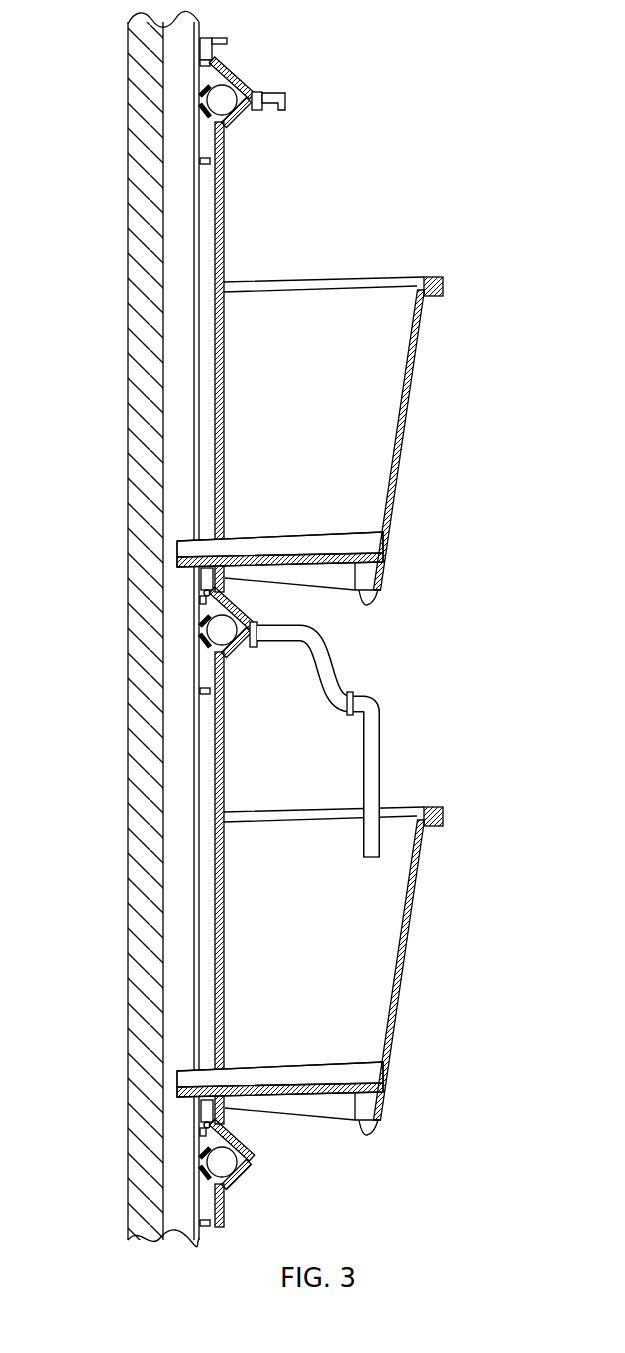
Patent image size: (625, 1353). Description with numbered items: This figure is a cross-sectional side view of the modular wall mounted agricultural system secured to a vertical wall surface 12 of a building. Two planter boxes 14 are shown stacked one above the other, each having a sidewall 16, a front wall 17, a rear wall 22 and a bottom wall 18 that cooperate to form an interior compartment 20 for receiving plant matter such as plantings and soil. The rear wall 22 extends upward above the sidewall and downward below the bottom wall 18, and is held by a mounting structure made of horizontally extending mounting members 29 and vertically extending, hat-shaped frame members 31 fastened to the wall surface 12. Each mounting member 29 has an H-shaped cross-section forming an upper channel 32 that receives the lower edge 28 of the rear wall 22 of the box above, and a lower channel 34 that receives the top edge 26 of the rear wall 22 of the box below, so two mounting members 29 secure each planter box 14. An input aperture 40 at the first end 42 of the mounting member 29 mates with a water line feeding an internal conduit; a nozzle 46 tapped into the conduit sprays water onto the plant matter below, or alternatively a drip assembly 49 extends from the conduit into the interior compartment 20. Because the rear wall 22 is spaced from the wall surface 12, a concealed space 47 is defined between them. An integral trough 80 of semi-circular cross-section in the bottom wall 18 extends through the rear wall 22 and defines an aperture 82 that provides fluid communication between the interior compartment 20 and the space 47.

The vertical wall surface 12 is at (128, 325).
The planter box 14 is at (383, 246).
The sidewall 16 is at (358, 378).
The front wall 17 is at (416, 470).
The bottom wall 18 is at (364, 603).
The interior compartment 20 is at (390, 298).
The rear wall 22 is at (226, 220).
The top edge 26 is at (241, 118).
The lower edge 28 is at (205, 598).
The mounting member 29 is at (240, 82).
The vertical frame member 31 is at (195, 258).
The upper channel 32 is at (221, 52).
The lower channel 34 is at (226, 156).
The input aperture 40 is at (219, 100).
The first end 42 is at (202, 115).
The nozzle 46 is at (286, 99).
The space 47 is at (178, 412).
The drip assembly 49 is at (327, 683).
The trough 80 is at (186, 567).
The aperture 82 is at (176, 547).